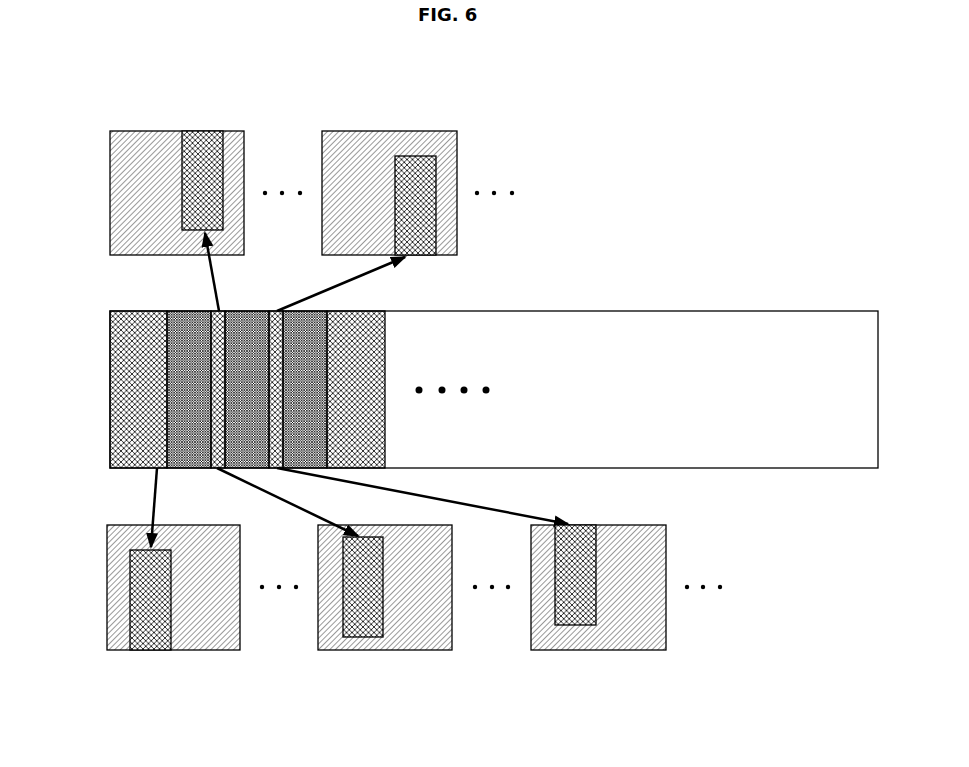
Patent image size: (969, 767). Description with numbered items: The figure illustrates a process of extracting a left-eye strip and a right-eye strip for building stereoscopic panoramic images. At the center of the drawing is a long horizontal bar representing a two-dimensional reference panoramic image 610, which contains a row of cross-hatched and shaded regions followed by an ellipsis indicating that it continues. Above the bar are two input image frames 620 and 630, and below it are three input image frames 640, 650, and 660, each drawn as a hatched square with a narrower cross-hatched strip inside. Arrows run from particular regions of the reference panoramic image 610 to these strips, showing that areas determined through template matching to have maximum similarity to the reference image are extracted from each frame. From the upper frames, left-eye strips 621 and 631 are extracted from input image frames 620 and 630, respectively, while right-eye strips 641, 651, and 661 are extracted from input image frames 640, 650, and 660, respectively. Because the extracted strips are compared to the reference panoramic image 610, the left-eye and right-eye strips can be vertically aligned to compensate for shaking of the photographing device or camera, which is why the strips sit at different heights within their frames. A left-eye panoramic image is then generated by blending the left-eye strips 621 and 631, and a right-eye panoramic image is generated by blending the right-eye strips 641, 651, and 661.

The 2D reference panoramic image 610 is at (110, 387).
The input image frame 620 is at (211, 161).
The left-eye strip 621 is at (217, 168).
The input image frame 630 is at (423, 161).
The left-eye strip 631 is at (428, 168).
The input image frame 640 is at (145, 626).
The right-eye strip 641 is at (145, 620).
The input image frame 650 is at (357, 626).
The right-eye strip 651 is at (355, 620).
The input image frame 660 is at (569, 626).
The right-eye strip 661 is at (567, 620).